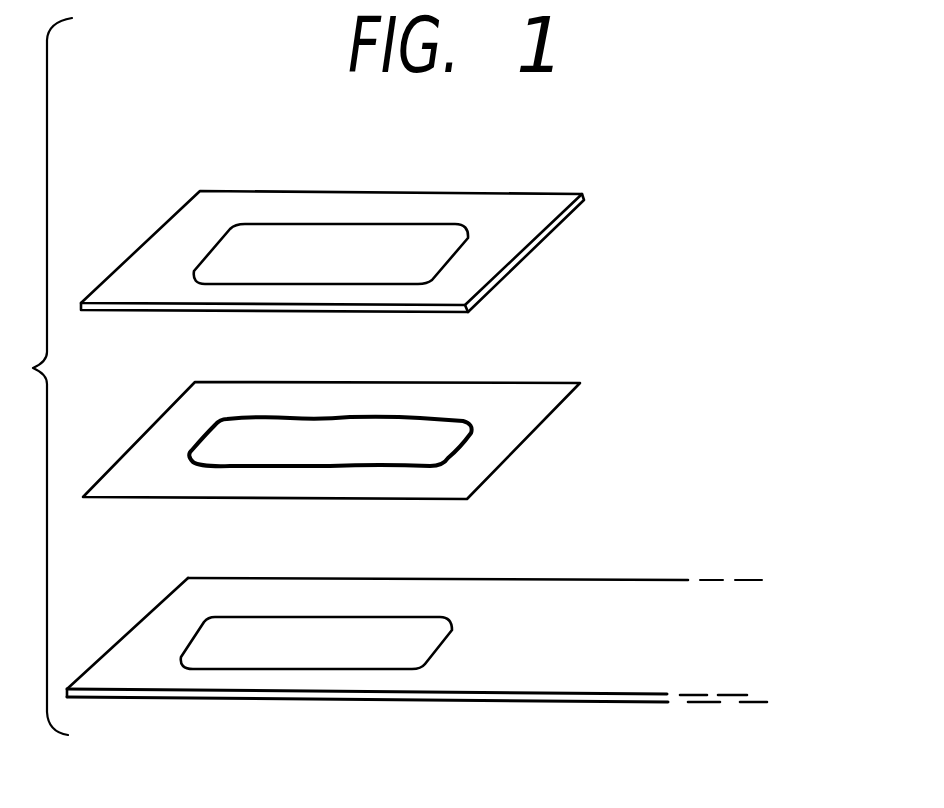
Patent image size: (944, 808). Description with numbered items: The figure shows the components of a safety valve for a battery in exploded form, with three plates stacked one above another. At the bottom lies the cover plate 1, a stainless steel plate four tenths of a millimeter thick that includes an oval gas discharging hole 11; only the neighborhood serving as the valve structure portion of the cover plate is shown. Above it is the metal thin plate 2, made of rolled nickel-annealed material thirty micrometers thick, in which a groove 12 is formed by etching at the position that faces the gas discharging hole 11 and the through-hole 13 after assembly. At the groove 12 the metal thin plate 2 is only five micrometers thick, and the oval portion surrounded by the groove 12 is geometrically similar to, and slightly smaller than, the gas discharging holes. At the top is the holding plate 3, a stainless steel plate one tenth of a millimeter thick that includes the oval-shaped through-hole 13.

The cover plate 1 is at (570, 593).
The metal thin plate 2 is at (532, 397).
The holding plate 3 is at (525, 210).
The gas discharging hole 11 is at (370, 627).
The groove 12 is at (400, 416).
The through-hole 13 is at (373, 234).